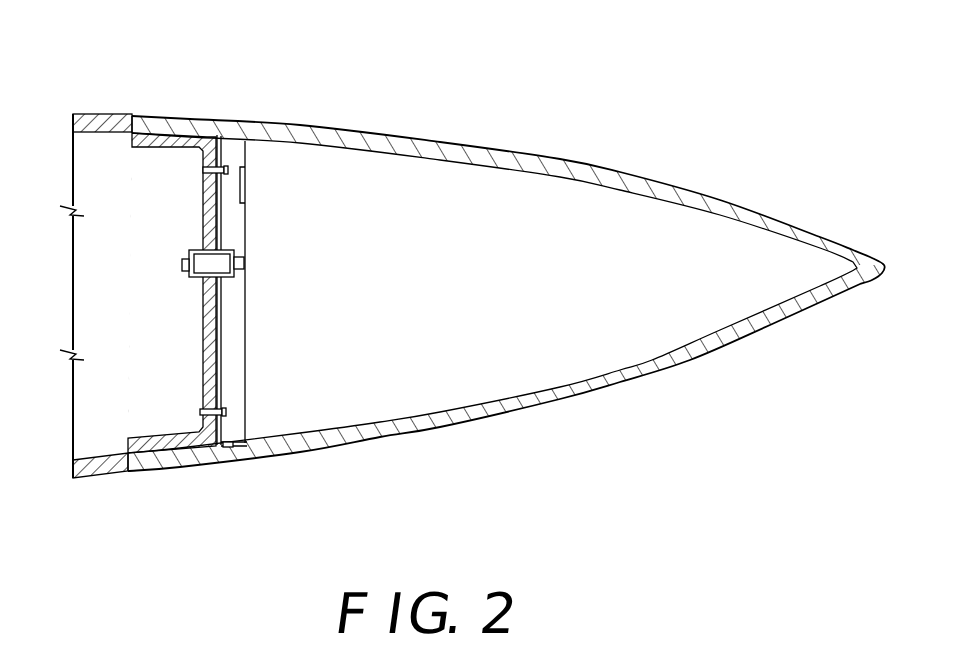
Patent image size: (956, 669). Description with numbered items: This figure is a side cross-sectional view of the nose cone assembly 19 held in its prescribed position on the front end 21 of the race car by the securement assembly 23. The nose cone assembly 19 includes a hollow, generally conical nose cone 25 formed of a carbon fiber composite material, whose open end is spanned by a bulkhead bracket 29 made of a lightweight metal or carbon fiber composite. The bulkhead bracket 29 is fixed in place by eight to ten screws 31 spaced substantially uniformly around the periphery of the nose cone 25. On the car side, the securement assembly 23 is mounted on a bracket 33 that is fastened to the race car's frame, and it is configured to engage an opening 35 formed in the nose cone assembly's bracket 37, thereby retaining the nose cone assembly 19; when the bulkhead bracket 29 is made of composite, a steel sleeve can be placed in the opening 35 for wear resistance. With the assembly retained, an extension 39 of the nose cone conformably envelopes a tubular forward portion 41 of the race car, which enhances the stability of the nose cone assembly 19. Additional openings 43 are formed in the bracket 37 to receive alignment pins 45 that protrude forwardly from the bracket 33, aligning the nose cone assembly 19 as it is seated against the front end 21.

The nose cone assembly 19 is at (548, 150).
The front end 21 is at (100, 405).
The securement assembly 23 is at (245, 273).
The nose cone 25 is at (535, 343).
The bulkhead bracket 29 is at (232, 353).
The screws 31 is at (233, 137).
The bracket 33 is at (203, 236).
The opening 35 is at (246, 252).
The bracket 37 is at (225, 214).
The extension 39 is at (185, 133).
The tubular forward portion 41 is at (162, 178).
The additional openings 43 is at (238, 165).
The alignment pins 45 is at (210, 420).